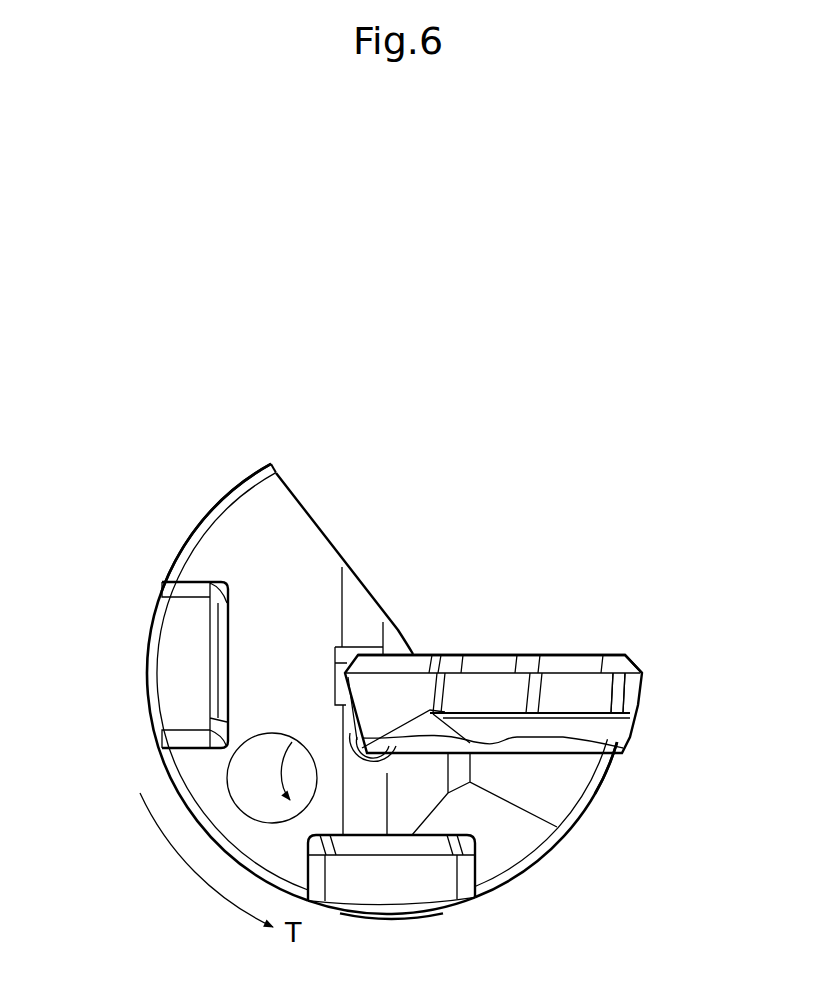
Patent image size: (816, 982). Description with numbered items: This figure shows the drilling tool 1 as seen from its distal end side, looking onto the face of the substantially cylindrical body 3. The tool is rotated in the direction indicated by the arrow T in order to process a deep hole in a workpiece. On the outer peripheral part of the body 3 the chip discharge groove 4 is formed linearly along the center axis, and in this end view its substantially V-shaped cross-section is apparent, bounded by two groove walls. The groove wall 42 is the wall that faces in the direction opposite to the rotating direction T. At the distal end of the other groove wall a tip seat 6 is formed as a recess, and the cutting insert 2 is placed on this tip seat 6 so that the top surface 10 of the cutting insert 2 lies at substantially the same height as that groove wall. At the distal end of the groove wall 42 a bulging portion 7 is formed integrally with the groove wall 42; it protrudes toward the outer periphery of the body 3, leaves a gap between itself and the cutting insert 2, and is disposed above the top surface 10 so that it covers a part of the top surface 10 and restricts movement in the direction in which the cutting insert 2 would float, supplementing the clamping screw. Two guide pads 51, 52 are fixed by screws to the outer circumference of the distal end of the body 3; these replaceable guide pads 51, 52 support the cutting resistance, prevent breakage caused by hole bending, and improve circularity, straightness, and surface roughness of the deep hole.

The drilling tool 1 is at (182, 548).
The cutting insert 2 is at (654, 635).
The body 3 is at (226, 492).
The chip discharge groove 4 is at (504, 648).
The tip seat 6 is at (618, 776).
The bulging portion 7 is at (368, 627).
The top surface 10 is at (600, 653).
The groove wall 42 is at (325, 533).
The guide pad 51 is at (148, 661).
The guide pad 52 is at (413, 920).